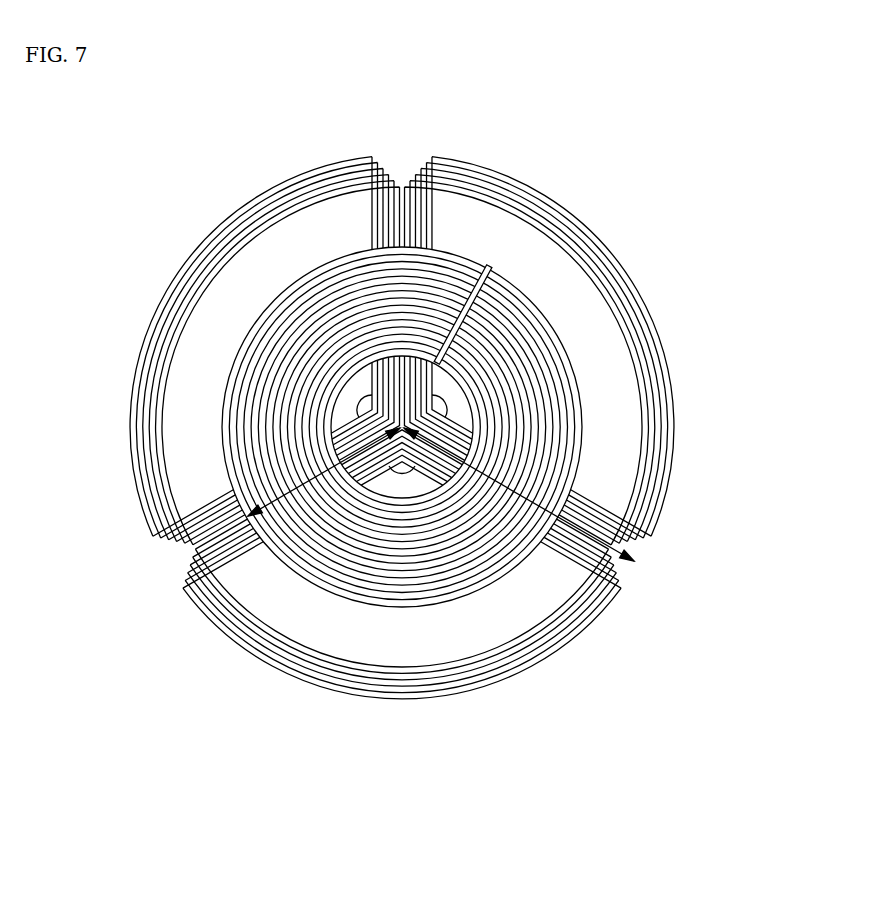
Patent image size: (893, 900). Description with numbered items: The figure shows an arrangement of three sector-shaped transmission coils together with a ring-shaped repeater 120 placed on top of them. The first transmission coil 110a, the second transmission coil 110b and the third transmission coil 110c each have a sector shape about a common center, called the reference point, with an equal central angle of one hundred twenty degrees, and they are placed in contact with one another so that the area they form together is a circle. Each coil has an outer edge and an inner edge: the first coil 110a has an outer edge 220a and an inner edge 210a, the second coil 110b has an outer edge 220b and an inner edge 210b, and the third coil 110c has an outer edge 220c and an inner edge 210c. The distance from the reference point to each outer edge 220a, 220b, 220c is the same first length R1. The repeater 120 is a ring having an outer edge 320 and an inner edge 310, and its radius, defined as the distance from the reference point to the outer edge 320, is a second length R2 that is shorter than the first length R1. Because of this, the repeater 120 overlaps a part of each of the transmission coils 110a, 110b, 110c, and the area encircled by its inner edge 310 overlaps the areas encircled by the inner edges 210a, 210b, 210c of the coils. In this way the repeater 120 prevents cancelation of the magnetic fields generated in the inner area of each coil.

The first transmission coil 110a is at (216, 334).
The second transmission coil 110b is at (536, 346).
The third transmission coil 110c is at (404, 611).
The repeater 120 is at (452, 263).
The inner edge of first transmission coil 210a is at (166, 343).
The inner edge of second transmission coil 210b is at (515, 352).
The inner edge of third transmission coil 210c is at (409, 562).
The outer edge of first transmission coil 220a is at (131, 434).
The outer edge of second transmission coil 220b is at (585, 234).
The outer edge of third transmission coil 220c is at (452, 680).
The inner edge of repeater 310 is at (476, 504).
The outer edge of repeater 320 is at (540, 559).
The first length R1 is at (590, 534).
The second length R2 is at (272, 495).